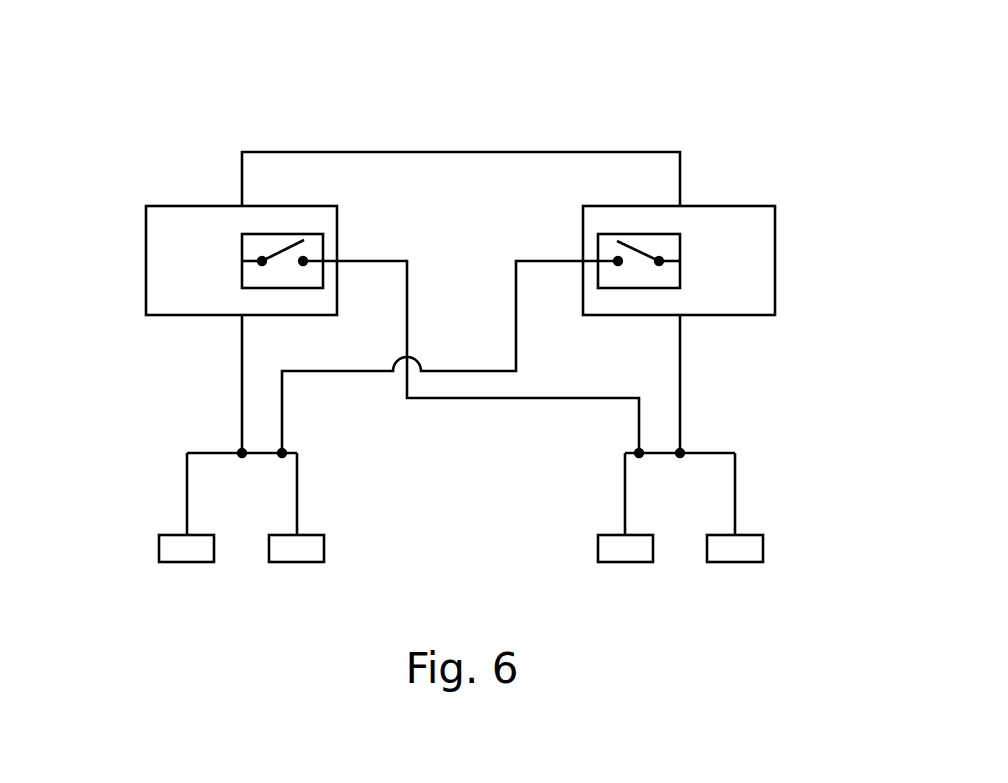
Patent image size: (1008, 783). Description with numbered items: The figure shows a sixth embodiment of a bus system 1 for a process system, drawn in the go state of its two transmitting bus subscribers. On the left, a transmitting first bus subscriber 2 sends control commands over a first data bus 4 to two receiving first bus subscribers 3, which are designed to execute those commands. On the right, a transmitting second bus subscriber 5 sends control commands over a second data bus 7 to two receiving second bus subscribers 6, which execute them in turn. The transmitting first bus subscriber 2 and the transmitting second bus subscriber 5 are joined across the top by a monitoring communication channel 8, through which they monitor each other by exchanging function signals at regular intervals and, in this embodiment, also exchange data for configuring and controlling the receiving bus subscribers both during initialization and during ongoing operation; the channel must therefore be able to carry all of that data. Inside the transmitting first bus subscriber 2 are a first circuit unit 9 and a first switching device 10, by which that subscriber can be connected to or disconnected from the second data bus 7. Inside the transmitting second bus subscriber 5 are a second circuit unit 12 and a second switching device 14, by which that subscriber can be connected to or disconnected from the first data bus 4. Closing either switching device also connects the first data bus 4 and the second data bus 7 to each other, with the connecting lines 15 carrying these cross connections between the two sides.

The bus system 1 is at (128, 67).
The transmitting first bus subscriber 2 is at (167, 219).
The receiving first bus subscribers 3 is at (179, 552).
The first data bus 4 is at (240, 385).
The transmitting second bus subscriber 5 is at (745, 222).
The receiving second bus subscribers 6 is at (618, 552).
The second data bus 7 is at (680, 383).
The monitoring communication channel 8 is at (558, 152).
The first circuit unit 9 is at (181, 261).
The first switching device 10 is at (248, 275).
The second circuit unit 12 is at (743, 261).
The second switching device 14 is at (673, 278).
The cross connection lines 15 is at (363, 260).